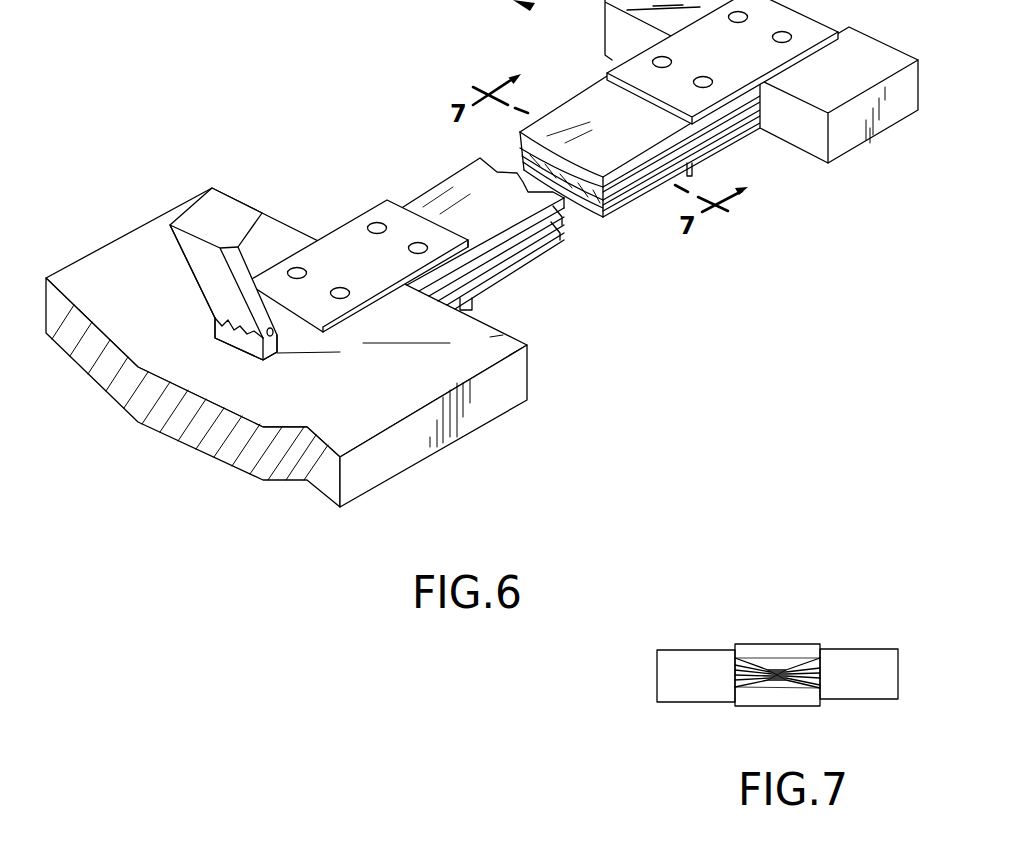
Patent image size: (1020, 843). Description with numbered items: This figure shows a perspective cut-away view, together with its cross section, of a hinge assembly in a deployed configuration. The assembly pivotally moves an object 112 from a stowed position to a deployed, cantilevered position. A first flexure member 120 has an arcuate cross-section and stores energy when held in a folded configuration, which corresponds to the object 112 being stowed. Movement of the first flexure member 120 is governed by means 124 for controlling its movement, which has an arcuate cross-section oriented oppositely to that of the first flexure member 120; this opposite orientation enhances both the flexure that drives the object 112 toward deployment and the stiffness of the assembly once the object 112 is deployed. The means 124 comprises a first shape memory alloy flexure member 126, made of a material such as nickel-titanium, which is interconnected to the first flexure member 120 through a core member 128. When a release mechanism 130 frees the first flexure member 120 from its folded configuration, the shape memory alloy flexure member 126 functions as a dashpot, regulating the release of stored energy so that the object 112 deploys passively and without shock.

In FIG. 6, the object 112 is at (857, 82).
In FIG. 7, the object 112 is at (708, 687).
In FIG. 6, the first flexure member 120 is at (523, 262).
In FIG. 7, the first flexure member 120 is at (807, 693).
In FIG. 6, the means for controlling movement of the first flexure member 124 is at (428, 180).
In FIG. 7, the means for controlling movement of the first flexure member 124 is at (752, 645).
In FIG. 6, the first shape memory alloy flexure member 126 is at (490, 215).
In FIG. 7, the first shape memory alloy flexure member 126 is at (817, 660).
In FIG. 6, the core member 128 is at (614, 195).
In FIG. 7, the core member 128 is at (825, 677).
In FIG. 6, the release mechanism 130 is at (195, 218).